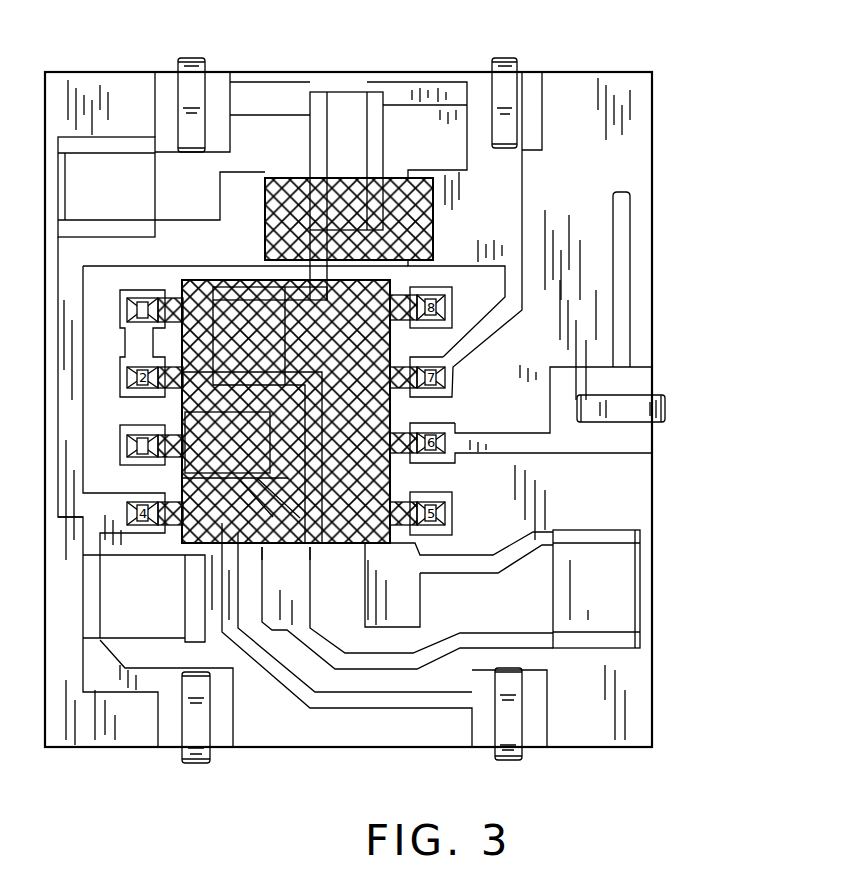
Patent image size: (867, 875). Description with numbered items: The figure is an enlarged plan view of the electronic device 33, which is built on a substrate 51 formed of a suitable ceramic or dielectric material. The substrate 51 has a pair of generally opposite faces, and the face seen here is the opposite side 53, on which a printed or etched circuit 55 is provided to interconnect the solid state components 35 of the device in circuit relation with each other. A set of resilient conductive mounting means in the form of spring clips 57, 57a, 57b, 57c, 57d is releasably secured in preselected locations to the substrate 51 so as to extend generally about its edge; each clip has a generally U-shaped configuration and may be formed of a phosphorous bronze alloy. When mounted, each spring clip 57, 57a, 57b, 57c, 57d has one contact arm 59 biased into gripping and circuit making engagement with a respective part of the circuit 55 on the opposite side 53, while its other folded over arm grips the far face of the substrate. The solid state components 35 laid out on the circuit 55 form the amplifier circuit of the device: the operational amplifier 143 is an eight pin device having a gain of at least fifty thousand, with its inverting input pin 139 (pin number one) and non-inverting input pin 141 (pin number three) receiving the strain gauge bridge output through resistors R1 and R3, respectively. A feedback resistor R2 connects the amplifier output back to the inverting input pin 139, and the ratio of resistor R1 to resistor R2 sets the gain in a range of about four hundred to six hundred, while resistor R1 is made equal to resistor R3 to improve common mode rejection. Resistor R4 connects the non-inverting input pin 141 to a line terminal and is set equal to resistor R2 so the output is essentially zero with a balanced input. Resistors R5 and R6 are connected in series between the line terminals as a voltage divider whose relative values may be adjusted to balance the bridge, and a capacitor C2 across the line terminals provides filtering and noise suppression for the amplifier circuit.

The electronic device 33 is at (383, 378).
The solid state components 35 is at (72, 523).
The substrate 51 is at (655, 713).
The opposite side 53 is at (634, 687).
The circuit 55 is at (567, 184).
The spring clip 57 is at (198, 57).
The spring clip 57a is at (505, 58).
The spring clip 57b is at (503, 760).
The spring clip 57c is at (205, 763).
The spring clip 57d is at (664, 400).
The contact arm 59 is at (177, 90).
The inverting input pin 139 is at (122, 308).
The non-inverting input pin 141 is at (122, 447).
The operational amplifier 143 is at (213, 287).
The resistor R1 is at (251, 387).
The feedback resistor R2 is at (617, 615).
The resistor R3 is at (275, 544).
The resistor R4 is at (153, 617).
The resistor R5 is at (347, 92).
The resistor R6 is at (128, 199).
The capacitor C2 is at (437, 218).